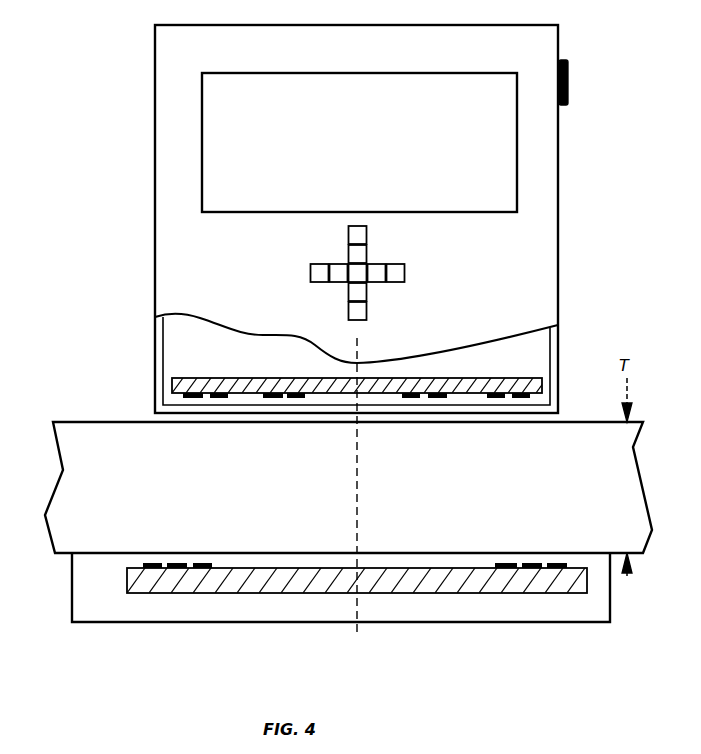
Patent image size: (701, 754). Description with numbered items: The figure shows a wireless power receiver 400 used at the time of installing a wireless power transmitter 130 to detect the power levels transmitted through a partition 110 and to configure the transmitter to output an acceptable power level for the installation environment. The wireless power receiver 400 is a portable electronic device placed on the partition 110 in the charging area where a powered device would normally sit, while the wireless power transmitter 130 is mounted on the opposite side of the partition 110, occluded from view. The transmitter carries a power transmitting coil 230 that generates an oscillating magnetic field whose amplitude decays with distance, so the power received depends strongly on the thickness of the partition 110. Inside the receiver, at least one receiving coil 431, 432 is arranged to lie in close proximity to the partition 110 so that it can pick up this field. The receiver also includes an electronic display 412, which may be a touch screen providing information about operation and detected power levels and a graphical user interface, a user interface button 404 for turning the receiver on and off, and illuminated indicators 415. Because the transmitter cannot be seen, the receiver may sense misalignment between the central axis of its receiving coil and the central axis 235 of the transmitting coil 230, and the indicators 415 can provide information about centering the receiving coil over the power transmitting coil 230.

The wireless power receiver 400 is at (373, 53).
The electronic display 412 is at (215, 118).
The user interface button 404 is at (568, 80).
The illuminated indicators 415 is at (377, 253).
The receiving coil 431 is at (292, 378).
The receiving coil 432 is at (490, 380).
The partition 110 is at (88, 420).
The wireless power transmitter 130 is at (72, 590).
The power transmitting coil 230 is at (142, 561).
The central axis 235 is at (358, 607).